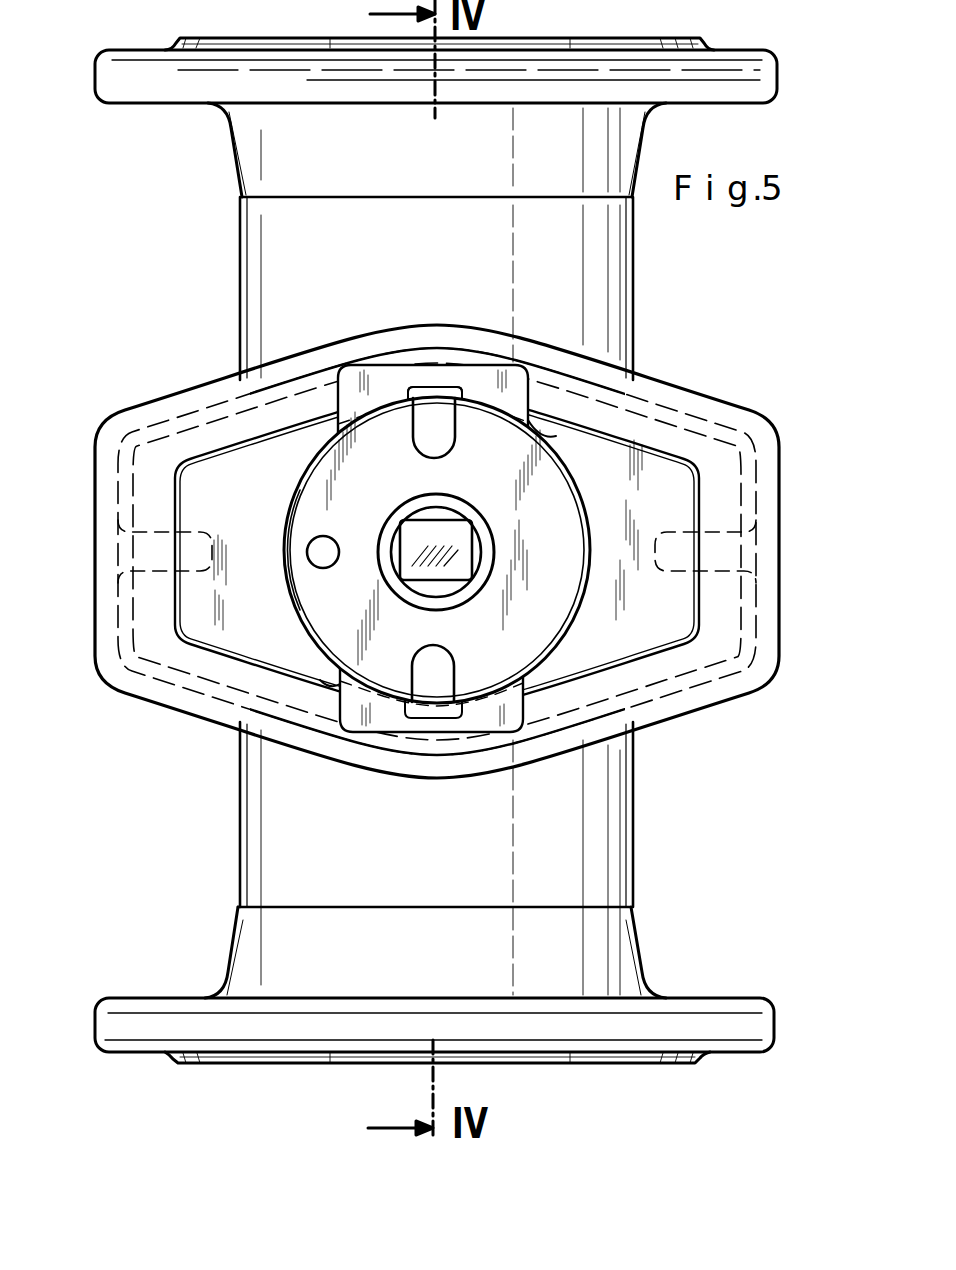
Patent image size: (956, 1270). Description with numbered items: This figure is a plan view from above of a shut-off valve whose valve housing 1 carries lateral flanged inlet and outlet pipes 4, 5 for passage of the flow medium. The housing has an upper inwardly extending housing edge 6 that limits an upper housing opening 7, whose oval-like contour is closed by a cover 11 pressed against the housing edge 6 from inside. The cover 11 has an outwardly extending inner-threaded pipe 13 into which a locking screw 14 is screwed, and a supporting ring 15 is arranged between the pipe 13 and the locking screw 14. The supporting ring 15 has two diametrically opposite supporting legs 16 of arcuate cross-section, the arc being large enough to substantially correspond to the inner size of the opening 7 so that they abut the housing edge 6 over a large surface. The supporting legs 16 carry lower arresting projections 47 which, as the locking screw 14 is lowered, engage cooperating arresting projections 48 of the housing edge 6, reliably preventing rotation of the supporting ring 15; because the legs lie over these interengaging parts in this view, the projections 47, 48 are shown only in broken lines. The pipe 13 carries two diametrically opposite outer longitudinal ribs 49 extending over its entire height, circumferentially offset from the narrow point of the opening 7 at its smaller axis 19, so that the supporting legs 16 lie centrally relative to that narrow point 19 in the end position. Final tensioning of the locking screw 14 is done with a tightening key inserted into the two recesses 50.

The valve housing 1 is at (710, 398).
The inlet pipe 4 is at (258, 231).
The outlet pipe 5 is at (600, 882).
The housing edge 6 is at (190, 658).
The housing opening 7 is at (150, 650).
The cover 11 is at (665, 607).
The pipe 13 is at (588, 522).
The locking screw 14 is at (550, 588).
The supporting ring 15 is at (298, 483).
The supporting legs 16 is at (367, 380).
The smaller axis 19 is at (438, 705).
The arresting projections 47 is at (418, 712).
The arresting projections 48 is at (418, 712).
The outer longitudinal ribs 49 is at (553, 435).
The recesses 50 is at (440, 662).